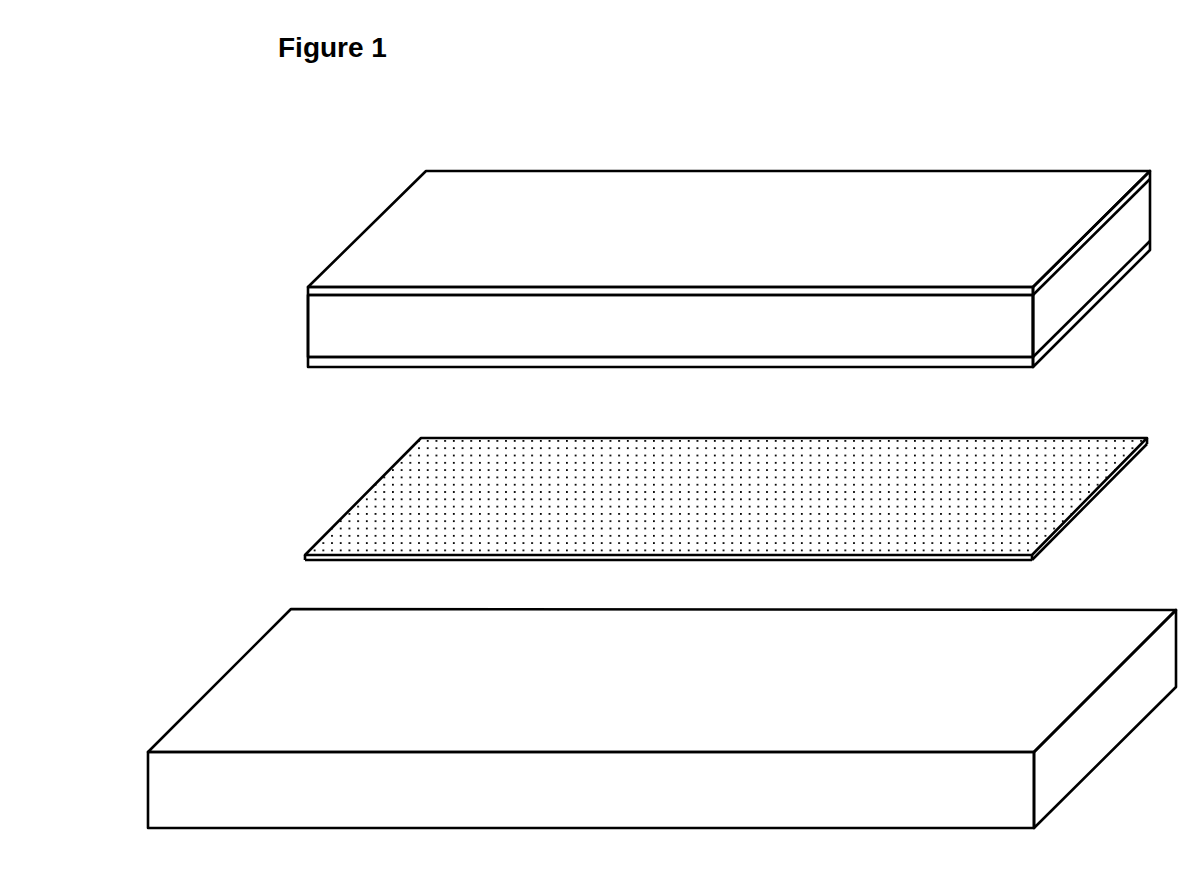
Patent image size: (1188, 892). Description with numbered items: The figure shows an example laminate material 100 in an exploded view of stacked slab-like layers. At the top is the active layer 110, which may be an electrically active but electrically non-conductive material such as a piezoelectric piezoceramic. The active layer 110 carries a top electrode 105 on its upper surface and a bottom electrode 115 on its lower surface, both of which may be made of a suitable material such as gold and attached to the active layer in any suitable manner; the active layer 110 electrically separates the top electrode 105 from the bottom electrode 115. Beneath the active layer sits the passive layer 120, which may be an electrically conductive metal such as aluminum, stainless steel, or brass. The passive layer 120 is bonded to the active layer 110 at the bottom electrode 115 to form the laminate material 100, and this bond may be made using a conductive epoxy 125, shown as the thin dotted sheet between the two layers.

The laminate material 100 is at (708, 280).
The top electrode 105 is at (951, 284).
The active layer 110 is at (298, 322).
The bottom electrode 115 is at (895, 369).
The passive layer 120 is at (169, 714).
The conductive epoxy 125 is at (1089, 429).